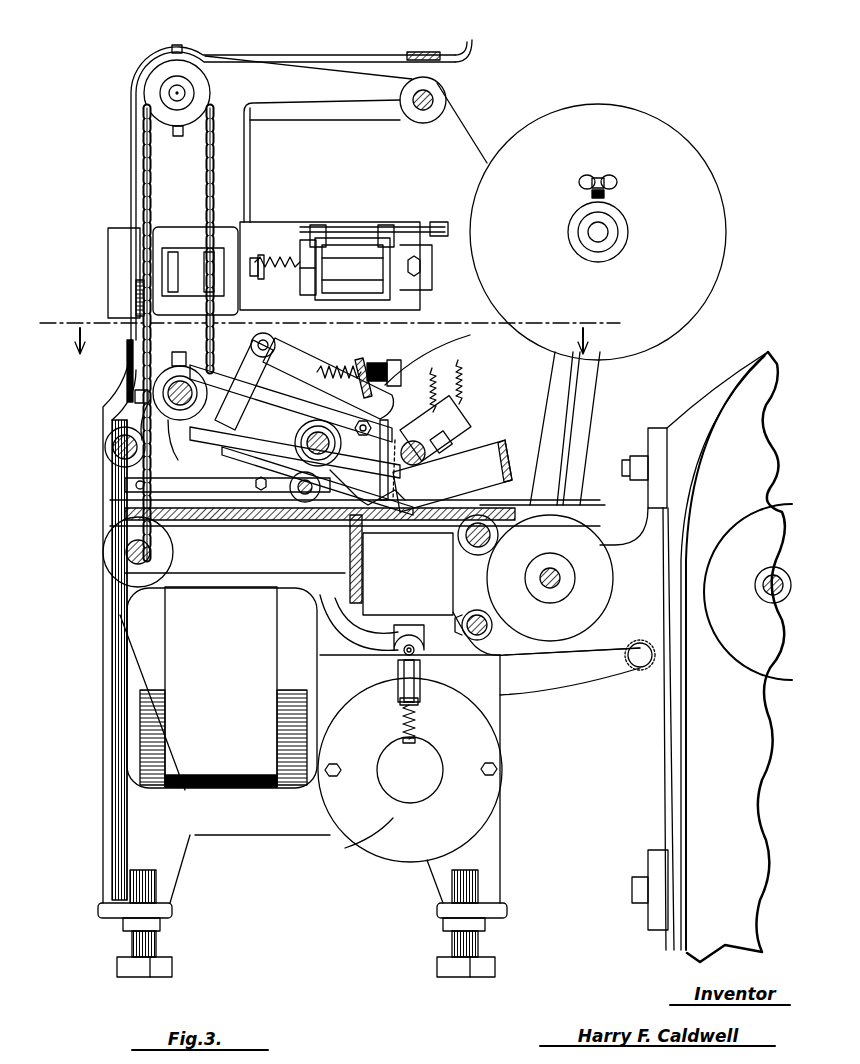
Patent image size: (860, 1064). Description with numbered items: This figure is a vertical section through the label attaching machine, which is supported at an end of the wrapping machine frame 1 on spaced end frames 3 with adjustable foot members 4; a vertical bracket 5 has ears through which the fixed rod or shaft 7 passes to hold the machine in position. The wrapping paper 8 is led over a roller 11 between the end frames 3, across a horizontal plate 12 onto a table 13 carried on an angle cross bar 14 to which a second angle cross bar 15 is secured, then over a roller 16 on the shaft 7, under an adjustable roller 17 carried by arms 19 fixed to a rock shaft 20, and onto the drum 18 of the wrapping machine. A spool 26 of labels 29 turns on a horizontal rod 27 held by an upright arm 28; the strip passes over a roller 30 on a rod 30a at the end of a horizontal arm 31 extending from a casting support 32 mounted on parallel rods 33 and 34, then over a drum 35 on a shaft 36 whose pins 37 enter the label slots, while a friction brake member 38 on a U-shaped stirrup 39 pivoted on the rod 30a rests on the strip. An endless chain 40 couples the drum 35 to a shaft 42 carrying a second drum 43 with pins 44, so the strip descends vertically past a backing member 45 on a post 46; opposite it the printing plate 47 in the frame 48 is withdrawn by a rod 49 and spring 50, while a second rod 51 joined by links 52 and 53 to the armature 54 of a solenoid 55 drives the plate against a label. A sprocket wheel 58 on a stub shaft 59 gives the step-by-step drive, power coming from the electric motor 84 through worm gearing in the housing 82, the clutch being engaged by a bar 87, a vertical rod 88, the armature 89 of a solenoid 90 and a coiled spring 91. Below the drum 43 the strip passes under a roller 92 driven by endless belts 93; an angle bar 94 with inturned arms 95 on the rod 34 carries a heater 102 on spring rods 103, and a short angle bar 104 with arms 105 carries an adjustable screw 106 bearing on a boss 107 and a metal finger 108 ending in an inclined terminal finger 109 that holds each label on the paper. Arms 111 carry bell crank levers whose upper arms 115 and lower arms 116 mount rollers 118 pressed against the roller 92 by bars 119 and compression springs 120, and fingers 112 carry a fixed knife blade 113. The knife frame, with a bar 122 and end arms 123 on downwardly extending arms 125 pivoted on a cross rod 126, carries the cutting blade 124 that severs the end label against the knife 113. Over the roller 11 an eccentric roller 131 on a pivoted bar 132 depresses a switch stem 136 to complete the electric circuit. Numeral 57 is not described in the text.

The wrapping machine frame 1 is at (690, 788).
The end frames 3 is at (112, 718).
The adjustable foot members 4 is at (503, 942).
The vertical bracket 5 is at (670, 557).
The rod or shaft 7 is at (560, 578).
The wrapping paper 8 is at (612, 598).
The roller 11 is at (125, 565).
The horizontal plate 12 is at (228, 525).
The horizontal table 13 is at (415, 520).
The angle cross bar 14 is at (385, 520).
The second angle cross bar 15 is at (350, 525).
The roller 16 is at (575, 535).
The adjustable roller 17 is at (640, 670).
The drum 18 is at (735, 640).
The arms 19 is at (560, 695).
The rock shaft 20 is at (477, 640).
The spool 26 is at (665, 135).
The horizontal rod 27 is at (600, 240).
The upright arm 28 is at (140, 185).
The labels 29 is at (460, 120).
The roller 30 is at (430, 124).
The rod 30a is at (432, 95).
The horizontal arm 31 is at (352, 122).
The vertical casting support 32 is at (248, 180).
The rod 33 is at (110, 452).
The rod 34 is at (305, 438).
The drum 35 is at (150, 80).
The fixed rod or shaft 36 is at (175, 93).
The pins 37 is at (180, 48).
The friction brake member 38 is at (290, 56).
The U-shaped stirrup 39 is at (425, 52).
The endless chain 40 is at (208, 195).
The horizontal shaft 42 is at (170, 395).
The second drum 43 is at (150, 380).
The pins 44 is at (180, 362).
The backing member 45 is at (125, 278).
The vertical post 46 is at (125, 352).
The printing plate 47 is at (168, 272).
The printing unit frame 48 is at (245, 235).
The rod 49 is at (262, 278).
The spring 50 is at (285, 253).
The second rod 51 is at (355, 238).
The link 52 is at (305, 240).
The link 53 is at (432, 265).
The armature 54 is at (410, 226).
The solenoid 55 is at (350, 372).
The guide roller 57 is at (270, 525).
The second sprocket wheel 58 is at (215, 525).
The stub shaft 59 is at (248, 525).
The housing 82 is at (385, 828).
The electric motor 84 is at (250, 755).
The bar 87 is at (420, 700).
The vertical rod 88 is at (405, 680).
The armature 89 is at (395, 640).
The solenoid 90 is at (359, 622).
The coiled spring 91 is at (416, 720).
The roller 92 is at (335, 518).
The endless belts 93 is at (240, 395).
The angle bar 94 is at (455, 385).
The inturned arms 95 is at (426, 377).
The heater 102 is at (460, 425).
The rods 103 is at (452, 368).
The short angle bar 104 is at (365, 370).
The arms 105 is at (328, 378).
The adjustable screw 106 is at (392, 360).
The boss 107 is at (436, 352).
The metal finger 108 is at (452, 476).
The inclined terminal finger 109 is at (428, 535).
The arms 111 is at (290, 435).
The fingers 112 is at (367, 460).
The fixed knife blade 113 is at (352, 580).
The upwardly extending arm 115 is at (222, 372).
The downwardly and inwardly extending arm 116 is at (285, 480).
The rollers 118 is at (295, 495).
The bars 119 is at (265, 370).
The coiled compression springs 120 is at (330, 375).
The bar 122 is at (570, 484).
The end arms 123 is at (500, 452).
The cutting blade 124 is at (395, 480).
The downwardly extending arms 125 is at (510, 512).
The cross rod 126 is at (482, 555).
The roller 131 is at (118, 525).
The bar 132 is at (138, 552).
The switch stem 136 is at (227, 485).